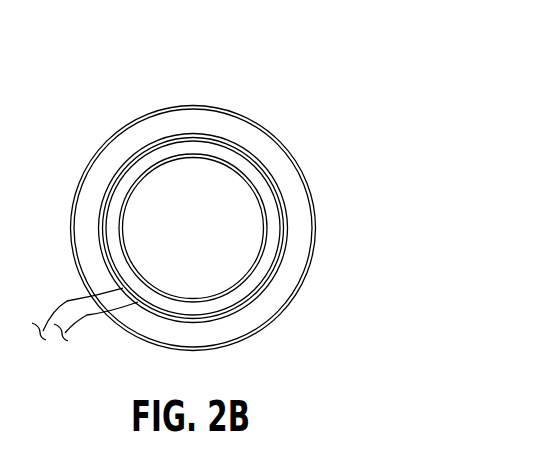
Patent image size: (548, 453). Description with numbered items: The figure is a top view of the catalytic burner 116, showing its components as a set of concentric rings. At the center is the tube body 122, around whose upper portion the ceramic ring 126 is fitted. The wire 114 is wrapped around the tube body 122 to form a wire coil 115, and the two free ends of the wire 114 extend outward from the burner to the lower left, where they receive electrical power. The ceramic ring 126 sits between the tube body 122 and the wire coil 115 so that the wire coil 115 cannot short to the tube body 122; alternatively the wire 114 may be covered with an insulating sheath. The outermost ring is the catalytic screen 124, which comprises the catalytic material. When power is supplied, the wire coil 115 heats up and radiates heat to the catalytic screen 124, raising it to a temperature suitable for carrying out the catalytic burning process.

The wire 114 is at (55, 312).
The wire coil 115 is at (285, 202).
The catalytic burner 116 is at (300, 67).
The tube body 122 is at (155, 168).
The catalytic screen 124 is at (138, 122).
The ceramic ring 126 is at (250, 293).